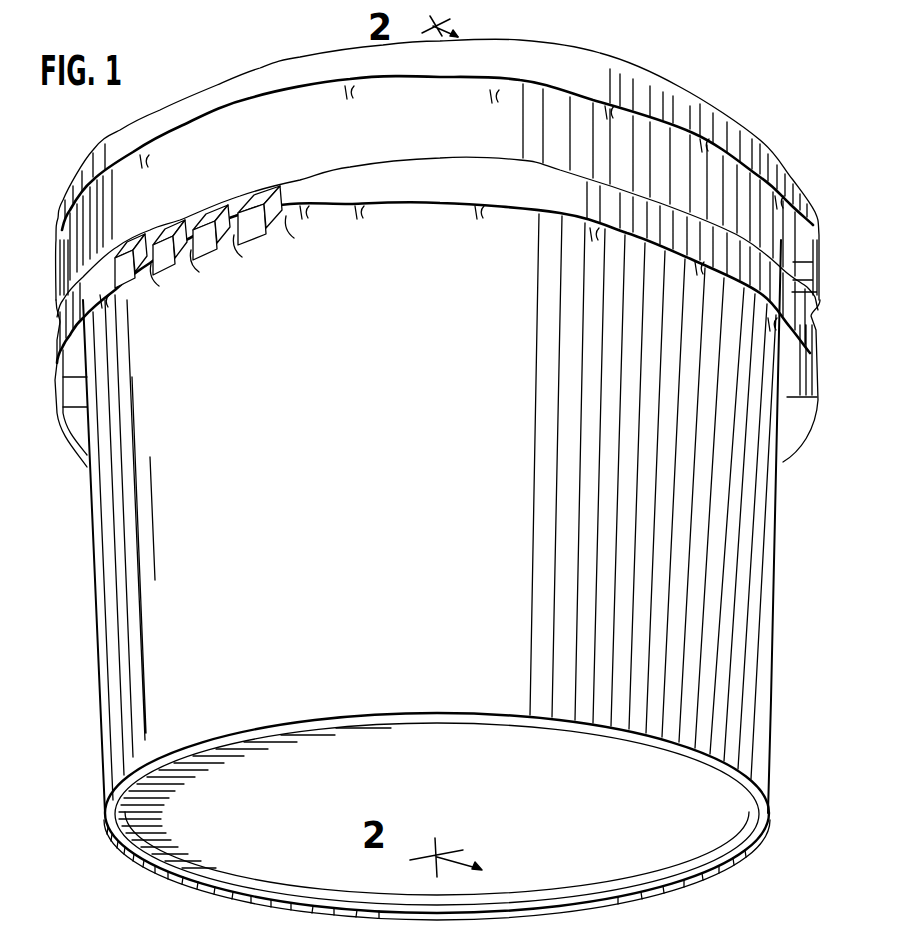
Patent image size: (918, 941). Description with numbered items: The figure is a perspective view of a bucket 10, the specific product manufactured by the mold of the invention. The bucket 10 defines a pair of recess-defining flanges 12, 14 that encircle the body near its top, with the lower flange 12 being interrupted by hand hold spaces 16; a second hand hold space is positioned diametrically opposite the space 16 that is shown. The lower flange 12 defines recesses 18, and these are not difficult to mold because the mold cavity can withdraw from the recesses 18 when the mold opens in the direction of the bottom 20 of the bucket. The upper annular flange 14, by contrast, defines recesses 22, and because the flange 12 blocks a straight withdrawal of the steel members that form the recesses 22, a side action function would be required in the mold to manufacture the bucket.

The bucket 10 is at (456, 456).
The recess-defining flange 12 is at (220, 192).
The annular flange 14 is at (677, 93).
The hand hold spaces 16 is at (234, 240).
The recesses 18 is at (417, 187).
The bottom 20 is at (622, 824).
The recesses 22 is at (418, 58).